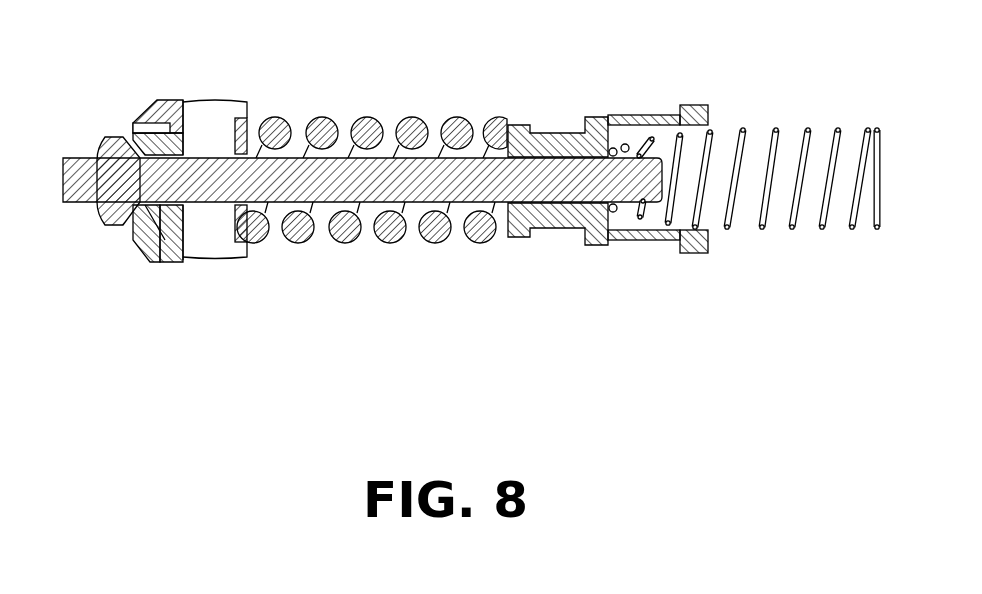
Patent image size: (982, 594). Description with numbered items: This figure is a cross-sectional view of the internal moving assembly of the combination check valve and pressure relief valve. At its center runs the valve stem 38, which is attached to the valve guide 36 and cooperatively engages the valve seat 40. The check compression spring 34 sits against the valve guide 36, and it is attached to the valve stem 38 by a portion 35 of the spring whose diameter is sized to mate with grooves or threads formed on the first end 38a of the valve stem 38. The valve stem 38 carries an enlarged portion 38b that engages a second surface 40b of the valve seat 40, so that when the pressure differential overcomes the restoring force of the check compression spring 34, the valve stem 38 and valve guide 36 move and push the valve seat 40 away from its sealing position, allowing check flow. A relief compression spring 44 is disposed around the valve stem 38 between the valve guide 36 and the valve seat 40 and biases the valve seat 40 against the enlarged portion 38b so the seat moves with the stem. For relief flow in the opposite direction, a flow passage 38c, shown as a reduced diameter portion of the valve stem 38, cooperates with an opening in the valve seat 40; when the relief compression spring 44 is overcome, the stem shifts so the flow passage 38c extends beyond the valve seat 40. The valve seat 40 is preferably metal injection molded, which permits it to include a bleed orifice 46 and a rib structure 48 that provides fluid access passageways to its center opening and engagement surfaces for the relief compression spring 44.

The check compression spring 34 is at (792, 229).
The portion 35 is at (625, 240).
The valve guide 36 is at (585, 125).
The valve stem 38 is at (410, 203).
The first end 38a is at (642, 127).
The enlarged portion 38b is at (112, 225).
The flow passage 38c is at (155, 262).
The valve seat 40 is at (172, 262).
The second surface 40b is at (132, 147).
The relief compression spring 44 is at (377, 120).
The bleed orifice 46 is at (165, 100).
The rib structure 48 is at (223, 113).